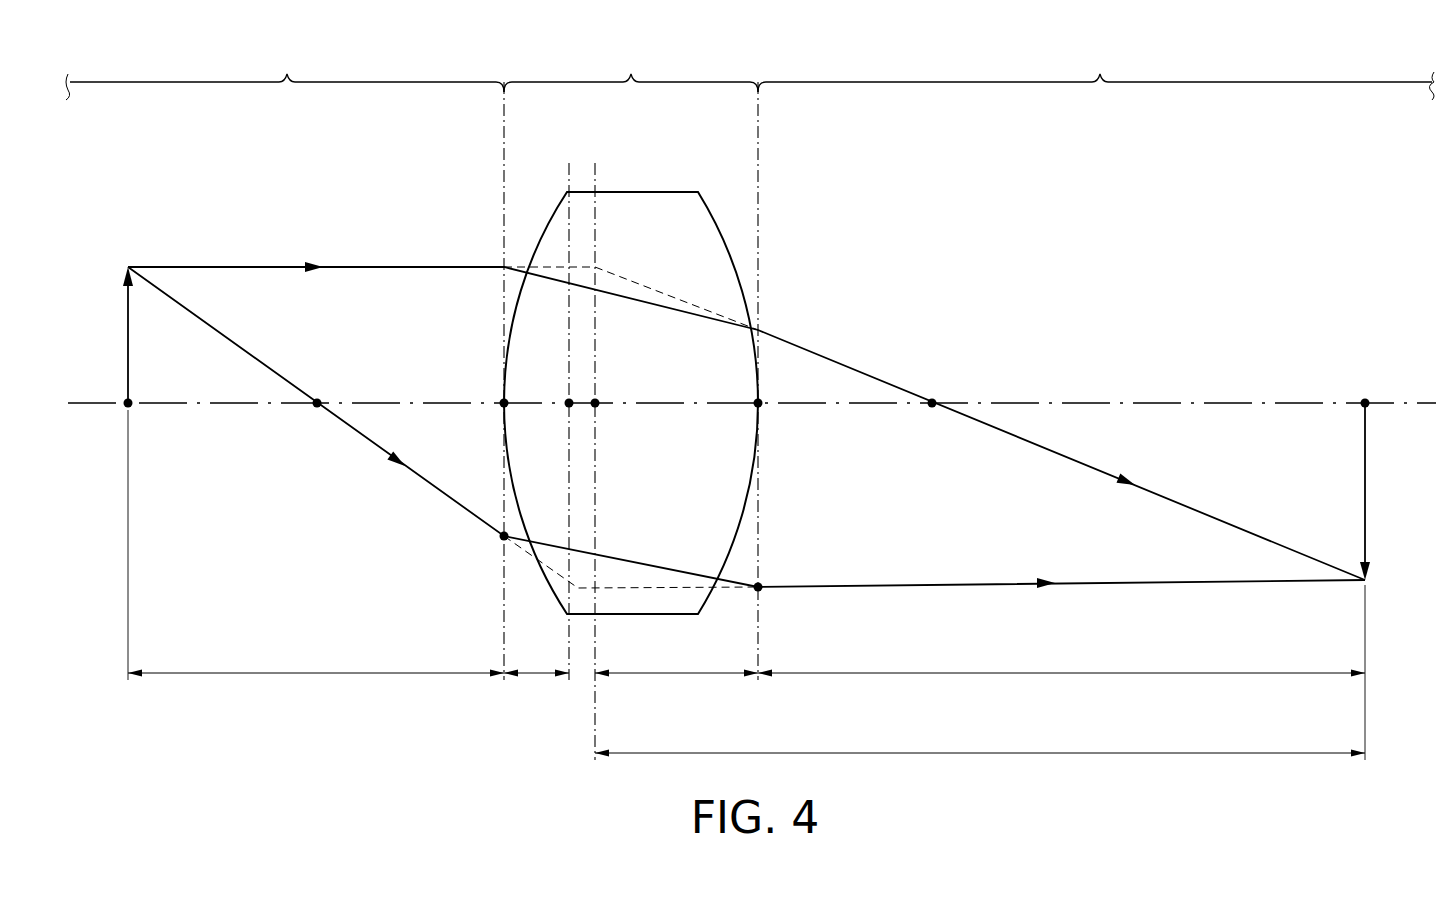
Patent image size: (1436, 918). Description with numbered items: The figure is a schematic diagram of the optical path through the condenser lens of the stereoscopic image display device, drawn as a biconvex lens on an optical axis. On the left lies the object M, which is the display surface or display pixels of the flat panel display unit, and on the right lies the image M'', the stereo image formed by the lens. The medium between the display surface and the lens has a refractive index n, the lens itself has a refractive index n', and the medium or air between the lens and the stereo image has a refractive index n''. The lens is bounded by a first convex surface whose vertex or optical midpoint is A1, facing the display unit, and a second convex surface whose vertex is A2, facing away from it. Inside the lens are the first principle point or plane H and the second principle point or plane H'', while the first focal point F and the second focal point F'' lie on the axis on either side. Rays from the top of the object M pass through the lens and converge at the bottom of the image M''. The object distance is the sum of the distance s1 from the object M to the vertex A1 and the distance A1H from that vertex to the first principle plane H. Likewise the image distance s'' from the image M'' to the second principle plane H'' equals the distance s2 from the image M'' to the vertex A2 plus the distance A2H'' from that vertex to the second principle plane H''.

The object M is at (115, 473).
The first focal point F is at (315, 390).
The vertex of the first surface A1 is at (489, 381).
The first principle point/plane H is at (558, 421).
The second principle point/plane H'' is at (612, 461).
The vertex of the second surface A2 is at (743, 381).
The second focal point F'' is at (935, 390).
The image M'' is at (1368, 566).
The refractive index of the incident-side medium n is at (285, 73).
The refractive index of the condenser lens n' is at (631, 69).
The refractive index of the emitting-side medium n'' is at (1096, 73).
The distance from the object to the first-surface vertex s1 is at (316, 661).
The distance from the first-surface vertex to the first principle point A1H is at (536, 658).
The distance from the second-surface vertex to the second principle point A2H'' is at (676, 658).
The distance from the image to the second-surface vertex s2 is at (1061, 661).
The image distance s'' is at (980, 741).